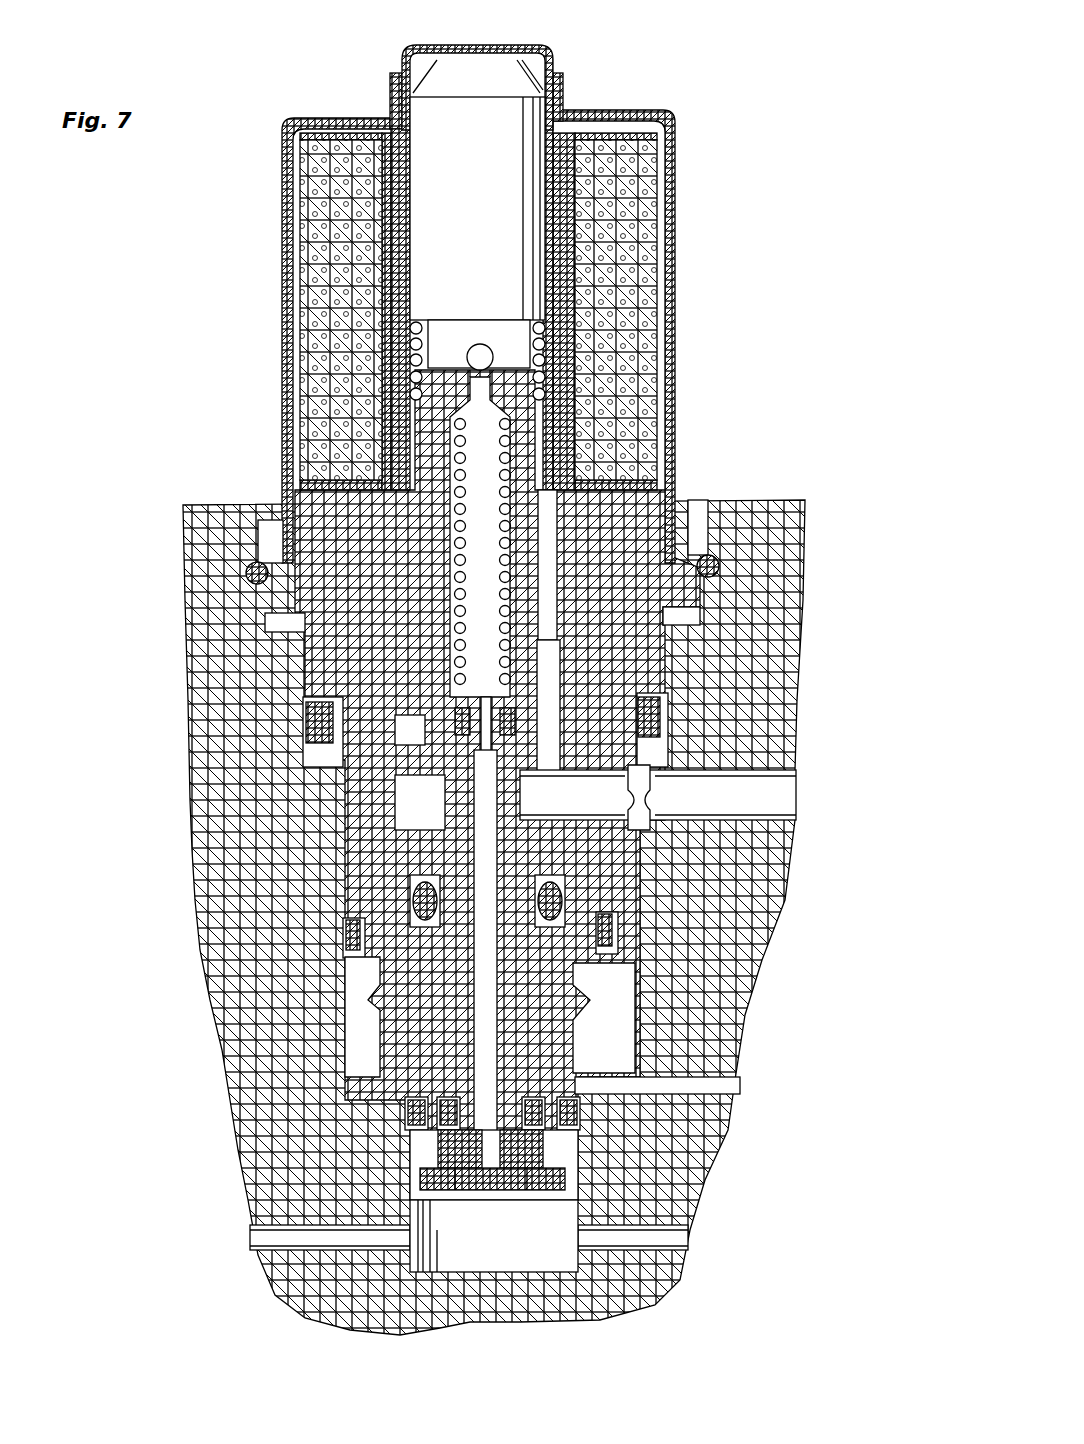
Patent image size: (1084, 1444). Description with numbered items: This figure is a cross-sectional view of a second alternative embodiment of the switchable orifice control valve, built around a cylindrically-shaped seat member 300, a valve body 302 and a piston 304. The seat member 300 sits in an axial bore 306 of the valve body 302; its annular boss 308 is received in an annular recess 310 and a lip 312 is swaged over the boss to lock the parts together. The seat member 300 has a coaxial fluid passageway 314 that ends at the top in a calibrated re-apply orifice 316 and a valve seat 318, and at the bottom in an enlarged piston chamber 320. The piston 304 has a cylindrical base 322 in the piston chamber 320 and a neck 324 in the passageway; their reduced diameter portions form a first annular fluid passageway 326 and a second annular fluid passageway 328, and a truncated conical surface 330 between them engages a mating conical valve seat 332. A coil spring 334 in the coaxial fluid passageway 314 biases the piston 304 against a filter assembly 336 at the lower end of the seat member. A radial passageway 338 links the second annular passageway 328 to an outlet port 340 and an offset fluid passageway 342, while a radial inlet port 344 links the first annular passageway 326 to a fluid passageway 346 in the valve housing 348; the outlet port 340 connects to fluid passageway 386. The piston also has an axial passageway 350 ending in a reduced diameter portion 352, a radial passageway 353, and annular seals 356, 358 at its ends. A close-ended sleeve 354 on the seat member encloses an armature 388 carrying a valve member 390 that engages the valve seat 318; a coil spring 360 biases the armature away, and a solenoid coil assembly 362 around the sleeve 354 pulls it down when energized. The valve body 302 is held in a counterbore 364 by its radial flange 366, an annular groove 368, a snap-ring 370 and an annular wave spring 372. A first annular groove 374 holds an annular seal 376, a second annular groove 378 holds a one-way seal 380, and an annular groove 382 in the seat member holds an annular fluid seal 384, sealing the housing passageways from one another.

The seat member 300 is at (472, 830).
The valve body 302 is at (638, 900).
The piston 304 is at (445, 1085).
The axial bore 306 is at (400, 752).
The annular boss 308 is at (370, 1045).
The annular recess 310 is at (400, 970).
The lip 312 is at (400, 1065).
The coaxial fluid passageway 314 is at (452, 422).
The calibrated re-apply orifice 316 is at (545, 380).
The valve seat 318 is at (428, 362).
The piston chamber 320 is at (580, 1040).
The cylindrical base 322 is at (350, 940).
The neck 324 is at (580, 868).
The first annular fluid passageway 326 is at (412, 1112).
The second annular fluid passageway 328 is at (435, 793).
The truncated conical surface 330 is at (420, 905).
The conical valve seat 332 is at (570, 1000).
The coil spring 334 is at (525, 400).
The filter assembly 336 is at (672, 1215).
The radial passageway 338 is at (600, 750).
The outlet port 340 is at (630, 798).
The offset fluid passageway 342 is at (562, 650).
The inlet port 344 is at (680, 1080).
The fluid passageway 346 is at (715, 1105).
The valve housing 348 is at (770, 492).
The axial passageway 350 is at (395, 870).
The reduced diameter portion 352 is at (450, 690).
The radial passageway 353 is at (560, 1120).
The close-ended sleeve 354 is at (420, 50).
The annular seal 356 is at (520, 708).
The annular seal 358 is at (455, 1178).
The coil spring 360 is at (560, 330).
The solenoid coil assembly 362 is at (672, 118).
The counterbore 364 is at (268, 505).
The radial flange 366 is at (700, 617).
The annular groove 368 is at (246, 573).
The snap-ring 370 is at (719, 566).
The annular wave spring 372 is at (268, 622).
The first annular groove 374 is at (312, 722).
The annular seal 376 is at (660, 720).
The second annular groove 378 is at (615, 975).
The one-way seal 380 is at (620, 940).
The annular groove 382 is at (562, 1150).
The annular fluid seal 384 is at (450, 1160).
The fluid passageway 386 is at (778, 793).
The armature 388 is at (433, 198).
The valve member 390 is at (407, 322).